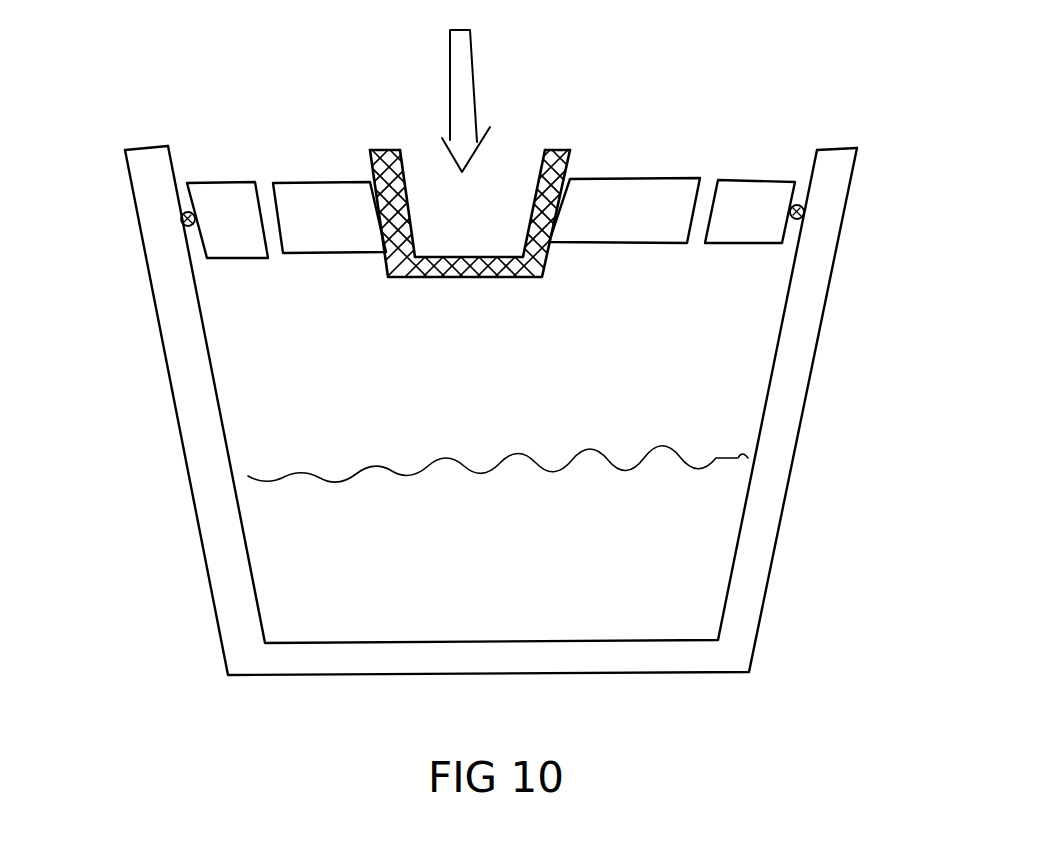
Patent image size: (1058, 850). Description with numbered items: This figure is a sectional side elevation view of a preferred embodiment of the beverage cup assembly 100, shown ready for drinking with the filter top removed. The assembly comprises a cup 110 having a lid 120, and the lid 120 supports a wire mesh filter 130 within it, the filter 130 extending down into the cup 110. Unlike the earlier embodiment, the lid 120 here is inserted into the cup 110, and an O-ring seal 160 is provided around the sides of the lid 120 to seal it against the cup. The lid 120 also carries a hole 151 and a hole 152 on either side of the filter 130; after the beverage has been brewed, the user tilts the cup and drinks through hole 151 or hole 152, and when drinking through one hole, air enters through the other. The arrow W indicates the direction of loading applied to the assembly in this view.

The apparatus 100 is at (877, 325).
The tank 110 is at (795, 398).
The plates 120 is at (641, 160).
The crucible 130 is at (482, 278).
The plate 151 is at (722, 157).
The plate 152 is at (264, 159).
The hinge 160 is at (181, 219).
The load direction W is at (470, 58).